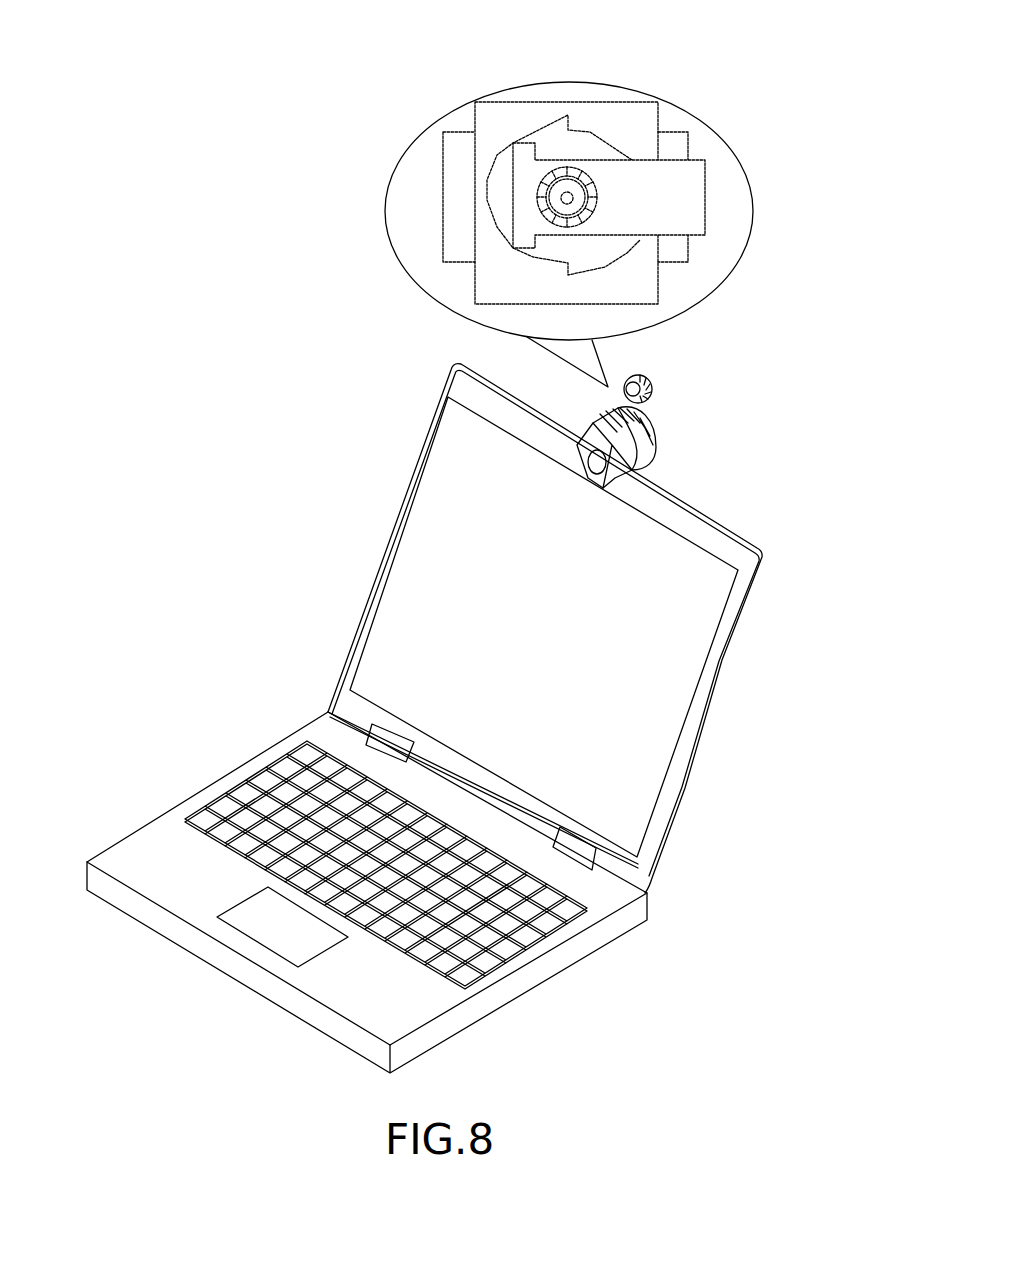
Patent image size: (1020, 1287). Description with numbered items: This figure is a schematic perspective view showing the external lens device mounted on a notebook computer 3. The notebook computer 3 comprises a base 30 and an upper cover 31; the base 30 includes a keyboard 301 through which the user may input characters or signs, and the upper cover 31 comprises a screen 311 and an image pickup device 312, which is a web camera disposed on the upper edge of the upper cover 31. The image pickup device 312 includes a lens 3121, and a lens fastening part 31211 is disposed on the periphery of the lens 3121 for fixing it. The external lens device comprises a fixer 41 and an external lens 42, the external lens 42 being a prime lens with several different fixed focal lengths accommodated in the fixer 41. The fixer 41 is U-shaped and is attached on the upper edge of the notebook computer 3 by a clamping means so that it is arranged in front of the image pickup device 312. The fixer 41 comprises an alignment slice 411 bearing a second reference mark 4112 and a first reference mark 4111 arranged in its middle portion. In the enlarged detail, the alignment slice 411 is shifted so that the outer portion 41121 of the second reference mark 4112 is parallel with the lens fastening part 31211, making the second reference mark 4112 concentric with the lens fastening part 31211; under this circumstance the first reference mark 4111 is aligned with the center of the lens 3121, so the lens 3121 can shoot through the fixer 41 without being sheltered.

The notebook computer 3 is at (278, 600).
The base 30 is at (232, 768).
The keyboard 301 is at (487, 937).
The upper cover 31 is at (403, 500).
The screen 311 is at (437, 428).
The image pickup device 312 is at (461, 232).
The lens 3121 is at (563, 178).
The lens fastening part 31211 is at (572, 185).
The fixer 41 is at (607, 412).
The alignment slice 411 is at (692, 207).
The first reference mark 4111 is at (568, 188).
The second reference mark 4112 is at (540, 186).
The outer portion 41121 is at (592, 217).
The external lens 42 is at (666, 383).